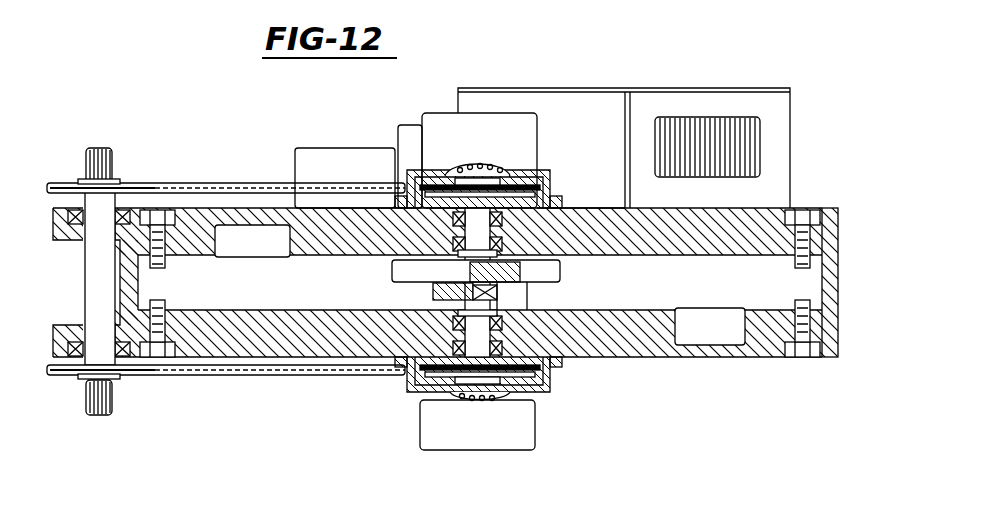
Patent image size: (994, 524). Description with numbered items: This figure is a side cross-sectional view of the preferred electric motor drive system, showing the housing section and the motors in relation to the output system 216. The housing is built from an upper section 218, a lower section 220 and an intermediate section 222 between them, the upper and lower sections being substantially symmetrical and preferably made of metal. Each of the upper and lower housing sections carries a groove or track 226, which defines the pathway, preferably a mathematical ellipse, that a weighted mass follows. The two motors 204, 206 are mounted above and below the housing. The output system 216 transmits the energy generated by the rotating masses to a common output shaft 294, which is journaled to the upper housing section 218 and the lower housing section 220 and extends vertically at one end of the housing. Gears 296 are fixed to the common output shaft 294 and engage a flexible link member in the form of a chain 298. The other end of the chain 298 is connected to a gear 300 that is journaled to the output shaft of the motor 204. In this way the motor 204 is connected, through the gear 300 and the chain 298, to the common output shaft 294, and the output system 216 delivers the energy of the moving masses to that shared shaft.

The motor 204 is at (519, 113).
The motor 206 is at (488, 436).
The output system 216 is at (157, 178).
The upper section 218 is at (831, 208).
The lower section 220 is at (838, 358).
The intermediate section 222 is at (842, 263).
The groove or track 226 is at (272, 253).
The common output shaft 294 is at (103, 300).
The gears 296 is at (49, 183).
The chain 298 is at (272, 184).
The gear 300 is at (525, 185).